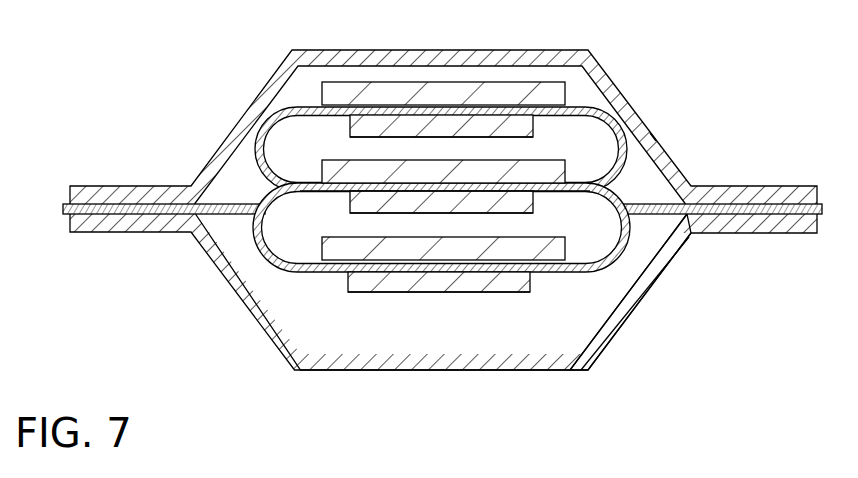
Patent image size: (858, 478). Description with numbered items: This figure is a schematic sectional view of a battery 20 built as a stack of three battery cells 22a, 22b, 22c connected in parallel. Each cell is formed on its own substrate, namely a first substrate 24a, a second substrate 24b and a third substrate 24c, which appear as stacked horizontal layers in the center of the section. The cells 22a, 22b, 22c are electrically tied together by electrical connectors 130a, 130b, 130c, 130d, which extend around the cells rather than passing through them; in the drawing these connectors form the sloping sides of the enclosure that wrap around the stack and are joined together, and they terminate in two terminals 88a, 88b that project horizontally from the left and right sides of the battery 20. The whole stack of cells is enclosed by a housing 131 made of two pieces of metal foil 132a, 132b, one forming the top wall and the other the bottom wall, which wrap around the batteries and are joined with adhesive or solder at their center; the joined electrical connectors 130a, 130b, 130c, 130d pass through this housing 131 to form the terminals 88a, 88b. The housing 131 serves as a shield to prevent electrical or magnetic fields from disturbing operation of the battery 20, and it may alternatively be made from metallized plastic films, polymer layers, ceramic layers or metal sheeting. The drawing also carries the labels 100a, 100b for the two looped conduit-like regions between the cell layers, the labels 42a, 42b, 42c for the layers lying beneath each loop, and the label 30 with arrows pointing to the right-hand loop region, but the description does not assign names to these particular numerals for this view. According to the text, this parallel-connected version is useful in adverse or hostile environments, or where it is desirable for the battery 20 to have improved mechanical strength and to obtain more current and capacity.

The battery 20 is at (128, 46).
The first battery cell 22a is at (366, 140).
The second battery cell 22b is at (364, 220).
The third battery cell 22c is at (425, 297).
The first substrate 24a is at (461, 103).
The second substrate 24b is at (461, 181).
The third substrate 24c is at (461, 258).
The flow channel 30 is at (638, 222).
The first interconnect layer 42a is at (468, 137).
The second interconnect layer 42b is at (490, 208).
The third interconnect layer 42c is at (462, 293).
The terminal 88a is at (80, 208).
The terminal 88b is at (788, 212).
The first serpentine conduit 100a is at (413, 156).
The second serpentine conduit 100b is at (413, 235).
The electrical connector 130a is at (270, 120).
The electrical connector 130b is at (262, 312).
The electrical connector 130c is at (618, 97).
The electrical connector 130d is at (594, 270).
The housing 131 is at (646, 137).
The metal foil 132a is at (578, 50).
The metal foil 132b is at (578, 370).